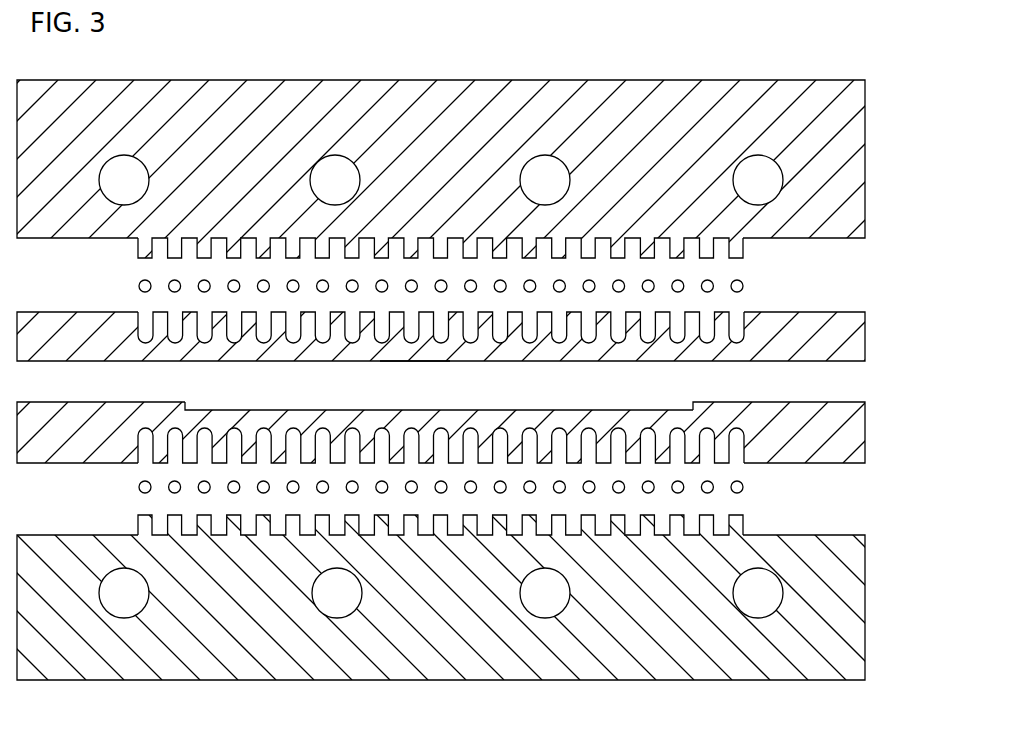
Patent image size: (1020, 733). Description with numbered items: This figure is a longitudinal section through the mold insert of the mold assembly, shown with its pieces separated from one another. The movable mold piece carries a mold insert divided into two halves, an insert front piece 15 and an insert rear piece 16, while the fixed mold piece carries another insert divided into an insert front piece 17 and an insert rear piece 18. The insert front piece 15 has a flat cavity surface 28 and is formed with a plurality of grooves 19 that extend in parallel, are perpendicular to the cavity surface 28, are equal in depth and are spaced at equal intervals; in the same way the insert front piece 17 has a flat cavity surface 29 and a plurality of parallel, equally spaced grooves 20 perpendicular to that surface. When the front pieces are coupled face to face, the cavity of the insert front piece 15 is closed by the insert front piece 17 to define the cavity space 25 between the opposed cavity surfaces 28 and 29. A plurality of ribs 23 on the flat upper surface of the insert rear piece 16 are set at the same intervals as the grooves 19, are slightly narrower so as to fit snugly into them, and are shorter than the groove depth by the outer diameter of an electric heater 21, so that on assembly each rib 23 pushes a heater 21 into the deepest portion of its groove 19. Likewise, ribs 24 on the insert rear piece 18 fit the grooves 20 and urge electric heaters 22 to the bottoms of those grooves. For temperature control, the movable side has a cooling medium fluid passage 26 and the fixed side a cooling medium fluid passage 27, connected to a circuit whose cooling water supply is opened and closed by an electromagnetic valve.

The insert front piece of the movable mold piece 15 is at (452, 439).
The insert rear piece of the movable mold piece 16 is at (499, 612).
The insert front piece of the fixed mold piece 17 is at (456, 337).
The insert rear piece of the fixed mold piece 18 is at (502, 154).
The grooves 19 is at (745, 447).
The grooves 20 is at (736, 339).
The electric heater 21 is at (742, 488).
The electric heater 22 is at (743, 286).
The ribs 23 is at (741, 522).
The ribs 24 is at (742, 249).
The cavity space 25 is at (206, 392).
The cooling medium fluid passage 26 is at (528, 608).
The cooling medium fluid passage 27 is at (329, 160).
The cavity surface 28 is at (478, 410).
The cavity surface 29 is at (408, 362).